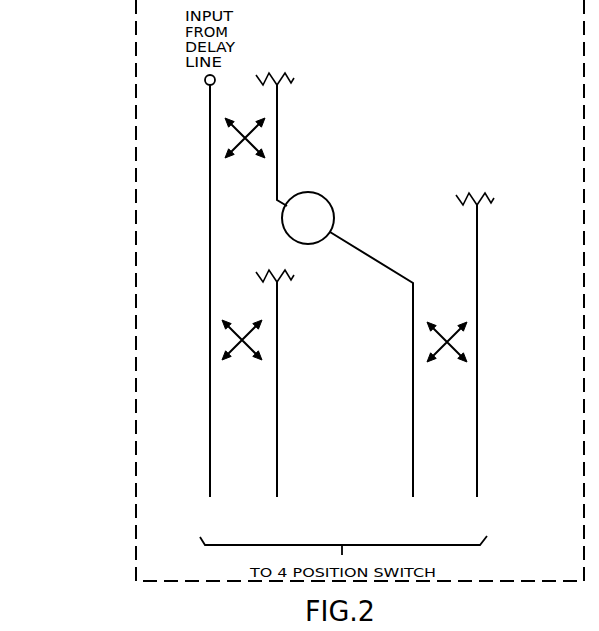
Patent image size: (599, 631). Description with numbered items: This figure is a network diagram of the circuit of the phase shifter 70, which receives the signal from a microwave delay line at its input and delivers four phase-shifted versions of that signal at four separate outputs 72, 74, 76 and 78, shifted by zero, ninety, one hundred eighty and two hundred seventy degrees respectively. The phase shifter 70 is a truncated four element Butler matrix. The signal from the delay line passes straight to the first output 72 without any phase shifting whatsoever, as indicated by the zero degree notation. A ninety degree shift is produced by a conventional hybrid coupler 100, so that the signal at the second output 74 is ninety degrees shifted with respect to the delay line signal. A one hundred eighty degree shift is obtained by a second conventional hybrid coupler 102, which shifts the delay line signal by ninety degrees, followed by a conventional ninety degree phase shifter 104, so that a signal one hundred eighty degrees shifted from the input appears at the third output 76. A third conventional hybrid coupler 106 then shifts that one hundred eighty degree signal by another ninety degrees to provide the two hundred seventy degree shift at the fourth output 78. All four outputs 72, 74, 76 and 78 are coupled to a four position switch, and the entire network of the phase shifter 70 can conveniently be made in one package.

The phase shifter 70 is at (134, 112).
The output 72 is at (212, 446).
The output 74 is at (280, 446).
The output 76 is at (416, 446).
The output 78 is at (480, 446).
The hybrid coupler 100 is at (266, 340).
The second hybrid coupler 102 is at (283, 132).
The 90° phase shifter 104 is at (318, 190).
The third hybrid coupler 106 is at (469, 342).